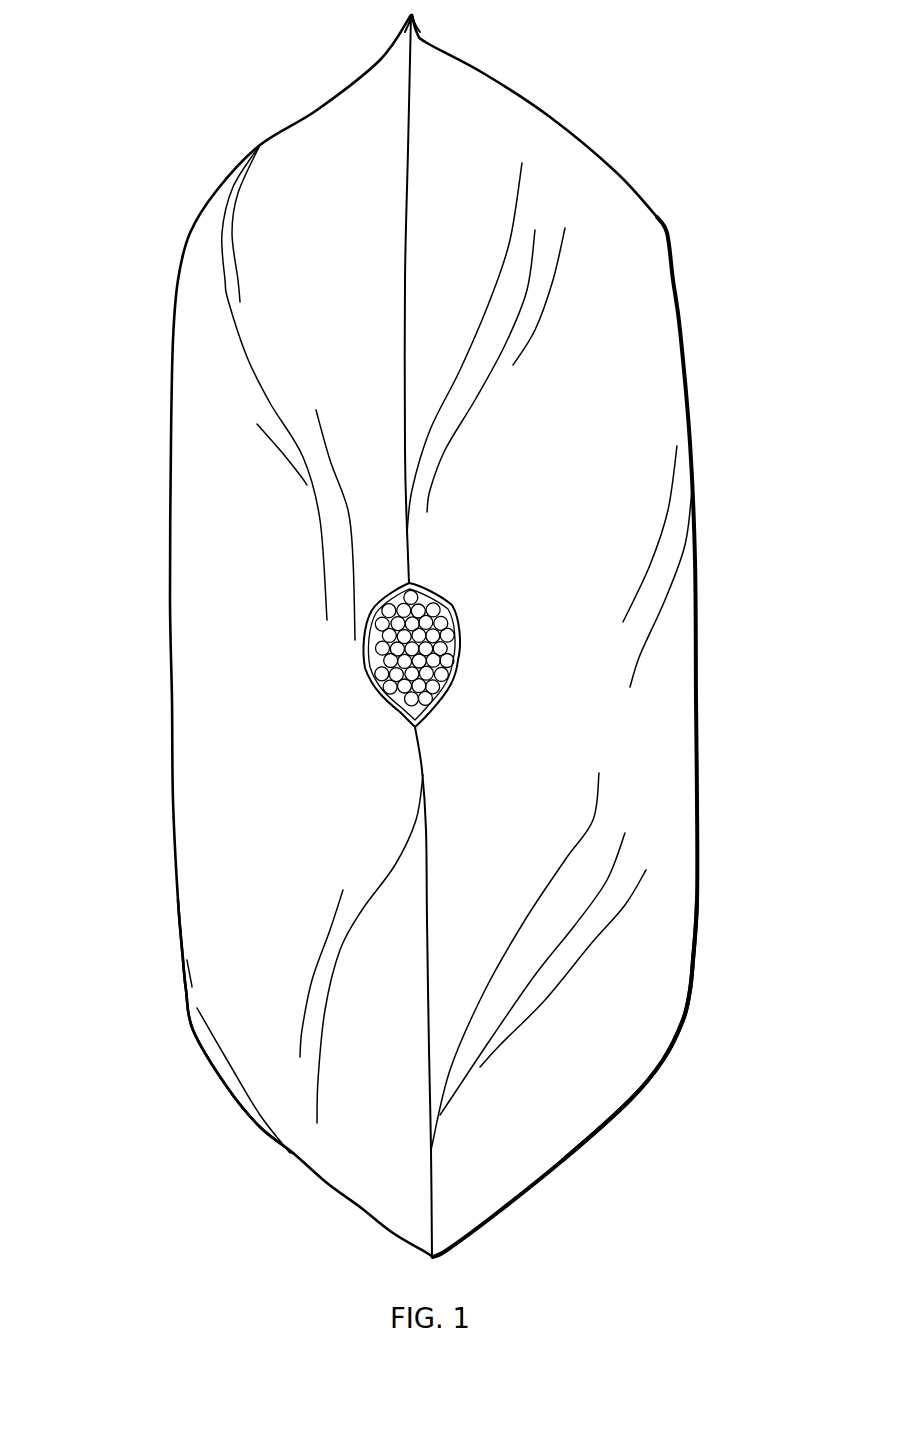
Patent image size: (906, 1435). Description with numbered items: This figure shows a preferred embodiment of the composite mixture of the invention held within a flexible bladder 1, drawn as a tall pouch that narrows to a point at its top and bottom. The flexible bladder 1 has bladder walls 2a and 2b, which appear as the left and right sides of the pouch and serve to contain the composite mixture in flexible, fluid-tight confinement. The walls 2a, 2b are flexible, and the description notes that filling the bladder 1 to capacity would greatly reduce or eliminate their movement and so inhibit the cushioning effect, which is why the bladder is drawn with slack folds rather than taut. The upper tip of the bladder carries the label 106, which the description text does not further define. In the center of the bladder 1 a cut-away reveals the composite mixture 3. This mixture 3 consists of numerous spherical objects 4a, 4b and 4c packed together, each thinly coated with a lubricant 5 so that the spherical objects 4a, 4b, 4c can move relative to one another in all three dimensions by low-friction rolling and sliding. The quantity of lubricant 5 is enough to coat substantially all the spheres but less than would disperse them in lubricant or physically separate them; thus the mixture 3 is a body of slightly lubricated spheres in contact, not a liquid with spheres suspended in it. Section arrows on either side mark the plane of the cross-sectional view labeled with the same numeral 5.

The flexible bladder 1 is at (300, 172).
The top seal 106 is at (404, 27).
The bladder wall 2a is at (186, 990).
The bladder wall 2b is at (691, 995).
The composite mixture 3 is at (395, 695).
The spherical object 4a is at (414, 648).
The spherical object 4b is at (427, 652).
The spherical object 4c is at (421, 664).
The lubricant 5 is at (253, 443).